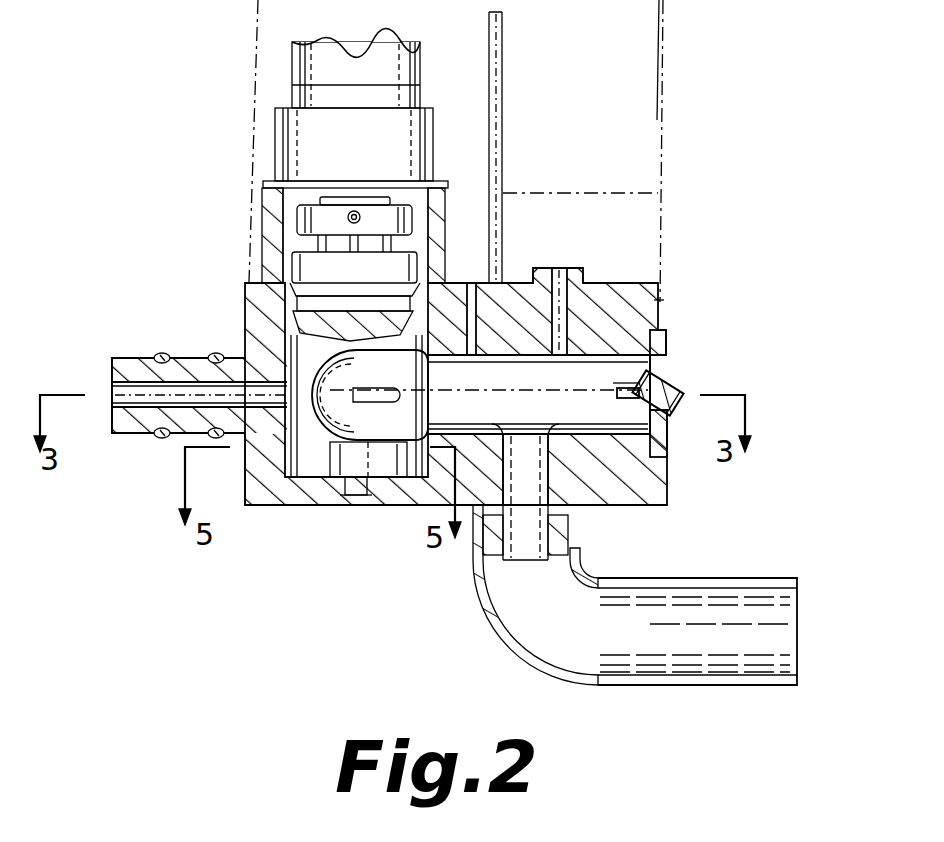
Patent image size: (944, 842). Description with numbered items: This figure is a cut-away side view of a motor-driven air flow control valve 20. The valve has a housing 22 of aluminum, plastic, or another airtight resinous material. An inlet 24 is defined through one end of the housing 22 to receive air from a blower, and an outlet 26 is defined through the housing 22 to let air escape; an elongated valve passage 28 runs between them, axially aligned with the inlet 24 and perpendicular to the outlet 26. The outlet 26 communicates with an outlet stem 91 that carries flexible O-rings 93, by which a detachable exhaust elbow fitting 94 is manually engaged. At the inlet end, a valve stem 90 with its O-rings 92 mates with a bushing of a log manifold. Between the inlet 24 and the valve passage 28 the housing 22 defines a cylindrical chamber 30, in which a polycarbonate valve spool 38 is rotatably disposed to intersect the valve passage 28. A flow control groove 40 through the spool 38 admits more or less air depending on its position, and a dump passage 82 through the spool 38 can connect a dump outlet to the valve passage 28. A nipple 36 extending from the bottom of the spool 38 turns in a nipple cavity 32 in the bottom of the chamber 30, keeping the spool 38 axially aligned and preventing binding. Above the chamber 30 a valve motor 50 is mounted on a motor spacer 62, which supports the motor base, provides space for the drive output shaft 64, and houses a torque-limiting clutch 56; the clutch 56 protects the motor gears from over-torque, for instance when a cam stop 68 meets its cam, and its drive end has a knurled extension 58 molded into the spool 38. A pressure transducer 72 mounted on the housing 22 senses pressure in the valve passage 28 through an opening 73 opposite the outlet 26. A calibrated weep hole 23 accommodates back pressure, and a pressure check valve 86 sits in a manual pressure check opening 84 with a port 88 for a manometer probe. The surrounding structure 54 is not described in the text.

The control valve 20 is at (200, 158).
The housing 22 is at (630, 283).
The weep hole 23 is at (492, 278).
The inlet 24 is at (199, 392).
The outlet 26 is at (520, 562).
The valve passage 28 is at (668, 342).
The chamber 30 is at (262, 470).
The nipple cavity 32 is at (366, 497).
The nipple 36 is at (343, 497).
The valve spool 38 is at (290, 305).
The flow control groove 40 is at (392, 383).
The valve motor 50 is at (366, 22).
The housing 54 is at (687, 80).
The torque-limiting clutch 56 is at (300, 246).
The knurled extension 58 is at (258, 292).
The motor spacer 62 is at (466, 196).
The drive output shaft 64 is at (352, 197).
The cam stop 68 is at (318, 506).
The pressure transducer 72 is at (570, 165).
The opening 73 is at (561, 268).
The dump passage 82 is at (332, 450).
The manual pressure check opening 84 is at (660, 376).
The pressure check valve 86 is at (675, 420).
The port 88 is at (682, 396).
The valve stem 90 is at (136, 358).
The outlet stem 91 is at (481, 578).
The O-rings 92 is at (187, 358).
The O-rings 93 is at (572, 530).
The exhaust elbow fitting 94 is at (668, 592).